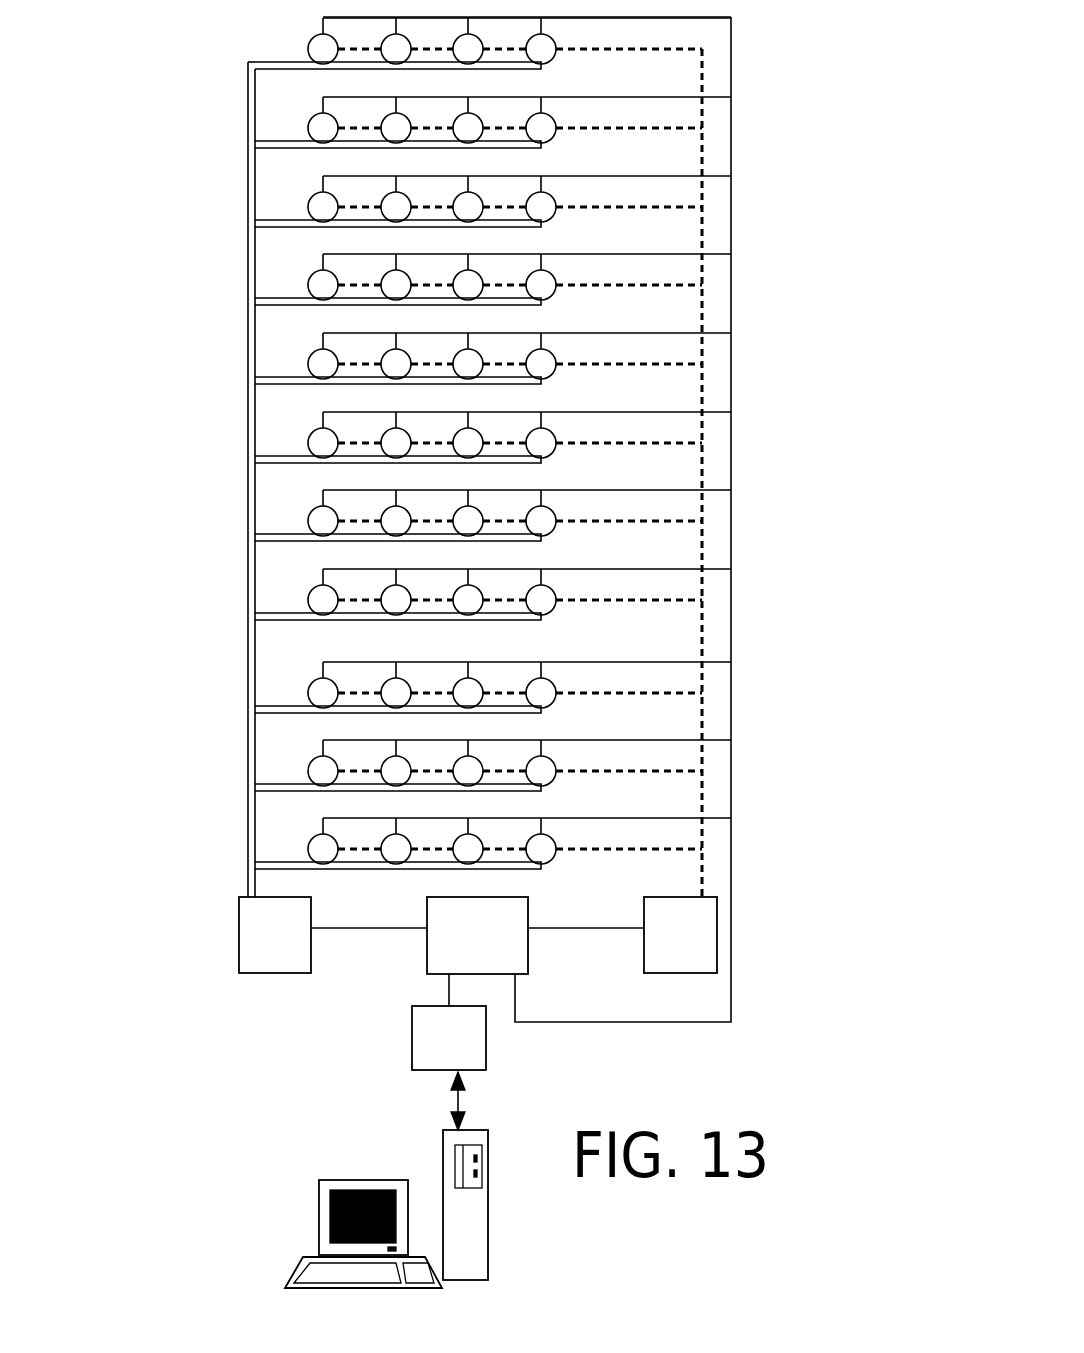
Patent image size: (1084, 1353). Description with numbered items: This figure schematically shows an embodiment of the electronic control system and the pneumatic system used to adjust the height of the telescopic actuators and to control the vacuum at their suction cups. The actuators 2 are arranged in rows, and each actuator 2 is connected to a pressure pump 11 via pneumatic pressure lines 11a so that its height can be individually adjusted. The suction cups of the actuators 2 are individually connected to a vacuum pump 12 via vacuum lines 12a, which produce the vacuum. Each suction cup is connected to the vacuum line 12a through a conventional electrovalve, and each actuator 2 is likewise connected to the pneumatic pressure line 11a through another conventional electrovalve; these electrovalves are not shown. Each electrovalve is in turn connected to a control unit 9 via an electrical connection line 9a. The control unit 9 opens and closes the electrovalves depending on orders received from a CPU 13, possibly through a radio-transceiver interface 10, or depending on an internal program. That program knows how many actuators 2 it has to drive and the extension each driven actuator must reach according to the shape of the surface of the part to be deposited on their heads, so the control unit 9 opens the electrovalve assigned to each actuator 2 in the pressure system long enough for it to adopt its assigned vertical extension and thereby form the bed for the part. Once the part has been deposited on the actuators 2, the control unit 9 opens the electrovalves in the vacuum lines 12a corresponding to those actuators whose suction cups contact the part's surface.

The actuator 2 is at (323, 443).
The control unit 9 is at (494, 952).
The electrical connection line 9a is at (737, 626).
The radio-transceiver interface 10 is at (431, 1055).
The pressure pump 11 is at (293, 952).
The pneumatic pressure line 11a is at (245, 646).
The vacuum pump 12 is at (663, 952).
The vacuum line 12a is at (706, 456).
The CPU 13 is at (408, 1218).